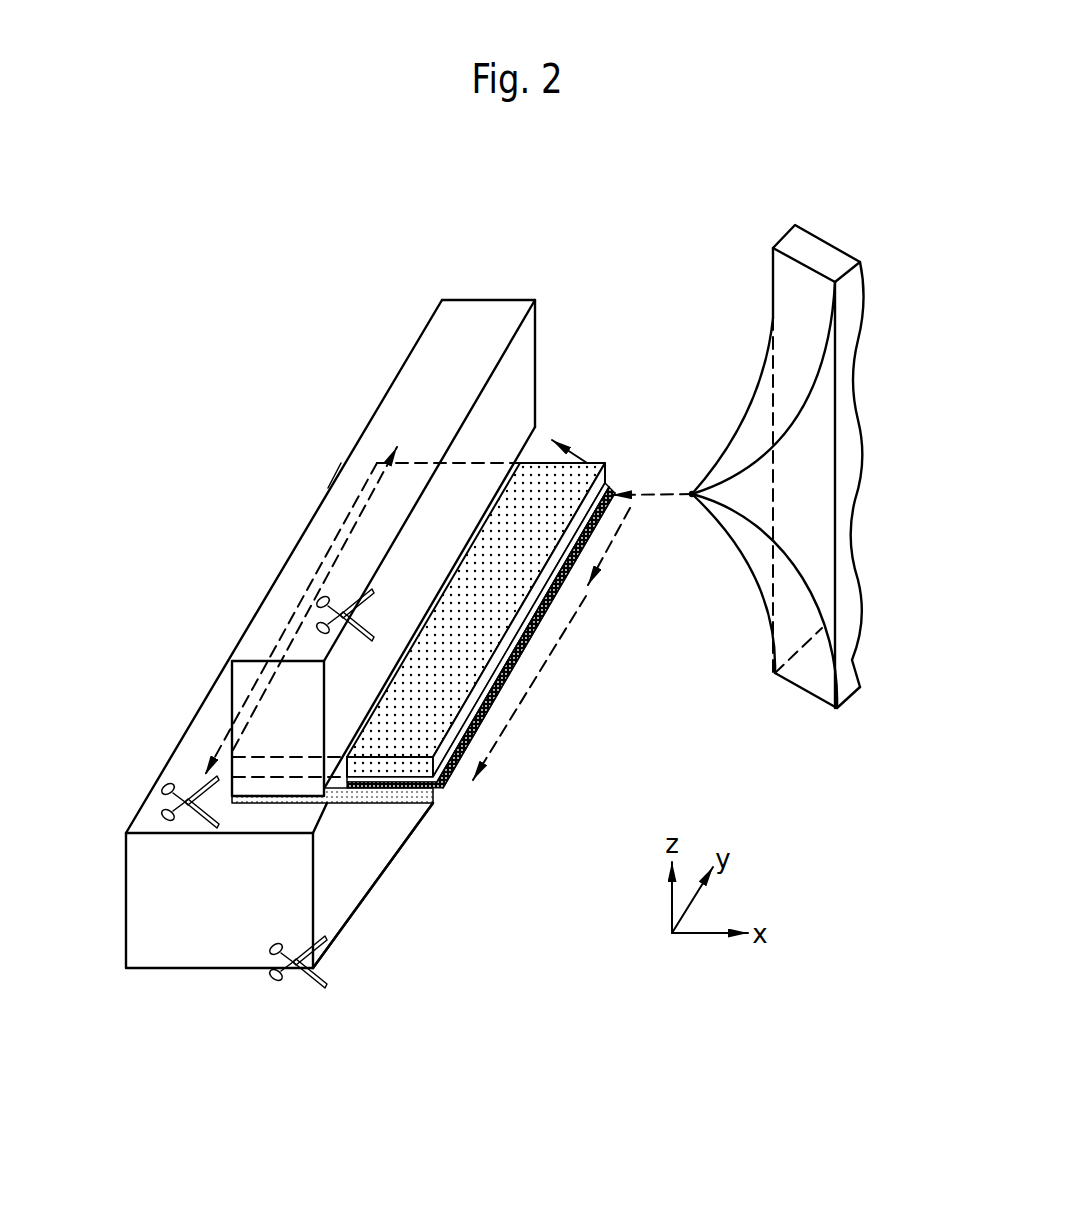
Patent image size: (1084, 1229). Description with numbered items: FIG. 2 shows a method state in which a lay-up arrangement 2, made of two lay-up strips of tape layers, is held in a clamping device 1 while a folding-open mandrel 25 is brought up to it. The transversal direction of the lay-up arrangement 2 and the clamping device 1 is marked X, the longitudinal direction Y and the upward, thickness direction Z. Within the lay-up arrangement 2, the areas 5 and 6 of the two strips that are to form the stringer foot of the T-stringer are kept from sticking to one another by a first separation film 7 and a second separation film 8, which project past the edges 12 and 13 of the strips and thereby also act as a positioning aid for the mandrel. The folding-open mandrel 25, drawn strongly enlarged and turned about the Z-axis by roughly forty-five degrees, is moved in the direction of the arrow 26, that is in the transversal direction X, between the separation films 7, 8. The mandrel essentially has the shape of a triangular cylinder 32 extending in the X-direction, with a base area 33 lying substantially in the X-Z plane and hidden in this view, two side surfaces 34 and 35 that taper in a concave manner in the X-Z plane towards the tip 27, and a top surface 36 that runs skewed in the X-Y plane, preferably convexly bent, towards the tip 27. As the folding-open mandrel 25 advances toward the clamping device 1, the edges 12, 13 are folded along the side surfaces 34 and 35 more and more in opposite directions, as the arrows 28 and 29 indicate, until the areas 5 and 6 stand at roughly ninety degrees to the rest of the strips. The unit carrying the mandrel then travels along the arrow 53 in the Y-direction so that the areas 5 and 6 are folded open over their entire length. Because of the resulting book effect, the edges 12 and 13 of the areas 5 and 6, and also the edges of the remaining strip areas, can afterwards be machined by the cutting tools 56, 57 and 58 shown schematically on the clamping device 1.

The clamping device 1 is at (150, 608).
The lay-up arrangement 2 is at (460, 787).
The area of the first lay-up strip 5 is at (430, 797).
The area of the second lay-up strip 6 is at (413, 801).
The first separation film 7 is at (613, 482).
The second separation film 8 is at (616, 500).
The edge of the first lay-up strip 12 is at (527, 622).
The edge of the second lay-up strip 13 is at (512, 668).
The folding-open mandrel 25 is at (745, 466).
The arrow 26 is at (690, 503).
The tip 27 is at (688, 485).
The arrow 28 is at (580, 453).
The arrow 29 is at (606, 562).
The triangular cylinder 32 is at (745, 540).
The base area 33 is at (766, 430).
The side surface 34 is at (793, 320).
The side surface 35 is at (793, 623).
The top surface 36 is at (815, 481).
The arrow 53 is at (502, 730).
The cutting tool 56 is at (320, 627).
The cutting tool 57 is at (280, 978).
The cutting tool 58 is at (163, 812).